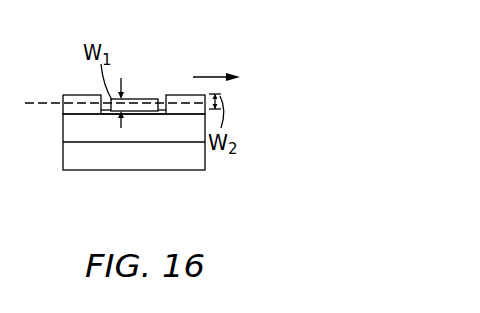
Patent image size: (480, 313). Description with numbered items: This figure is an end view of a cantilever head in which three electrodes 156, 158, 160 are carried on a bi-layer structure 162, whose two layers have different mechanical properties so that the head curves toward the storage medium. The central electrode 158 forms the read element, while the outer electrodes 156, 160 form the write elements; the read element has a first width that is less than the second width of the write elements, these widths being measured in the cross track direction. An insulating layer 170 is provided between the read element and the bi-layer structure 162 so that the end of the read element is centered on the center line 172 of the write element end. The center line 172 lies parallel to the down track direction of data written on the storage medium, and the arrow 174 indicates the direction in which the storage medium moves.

The electrode 156 is at (75, 98).
The electrode 158 is at (133, 99).
The electrode 160 is at (177, 97).
The bi-layer structure 162 is at (100, 183).
The insulating layer 170 is at (136, 113).
The center line 172 is at (48, 103).
The arrow 174 is at (213, 76).